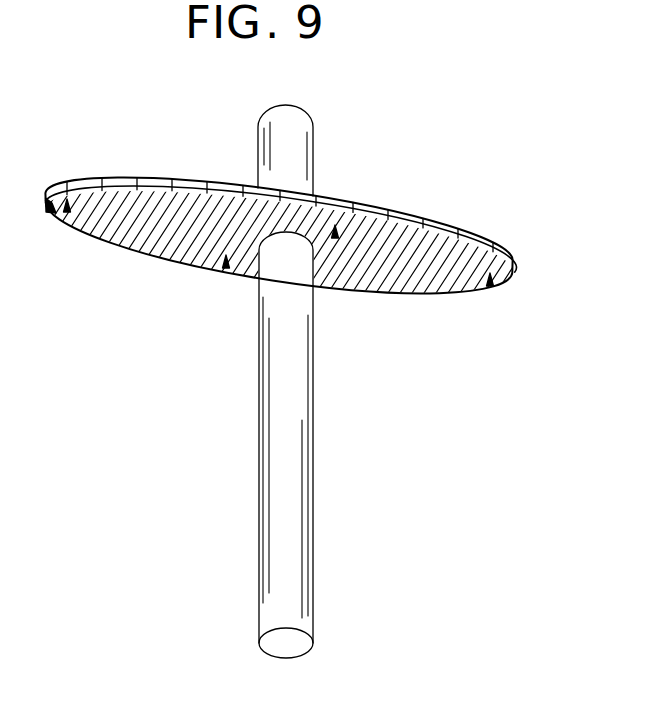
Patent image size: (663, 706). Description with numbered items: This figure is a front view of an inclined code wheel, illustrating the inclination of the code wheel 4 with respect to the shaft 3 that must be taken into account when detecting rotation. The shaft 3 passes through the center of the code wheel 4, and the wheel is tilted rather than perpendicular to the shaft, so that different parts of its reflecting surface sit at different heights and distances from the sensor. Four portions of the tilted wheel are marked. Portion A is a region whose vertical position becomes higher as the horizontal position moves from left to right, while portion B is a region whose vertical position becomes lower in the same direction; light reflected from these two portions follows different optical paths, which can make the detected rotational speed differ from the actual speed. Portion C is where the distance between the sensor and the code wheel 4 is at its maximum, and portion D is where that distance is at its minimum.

The shaft 3 is at (274, 145).
The code wheel 4 is at (477, 238).
The portion A of the code wheel A is at (226, 266).
The portion B of the code wheel B is at (335, 236).
The portion C of the code wheel C is at (67, 210).
The portion D of the code wheel D is at (490, 284).